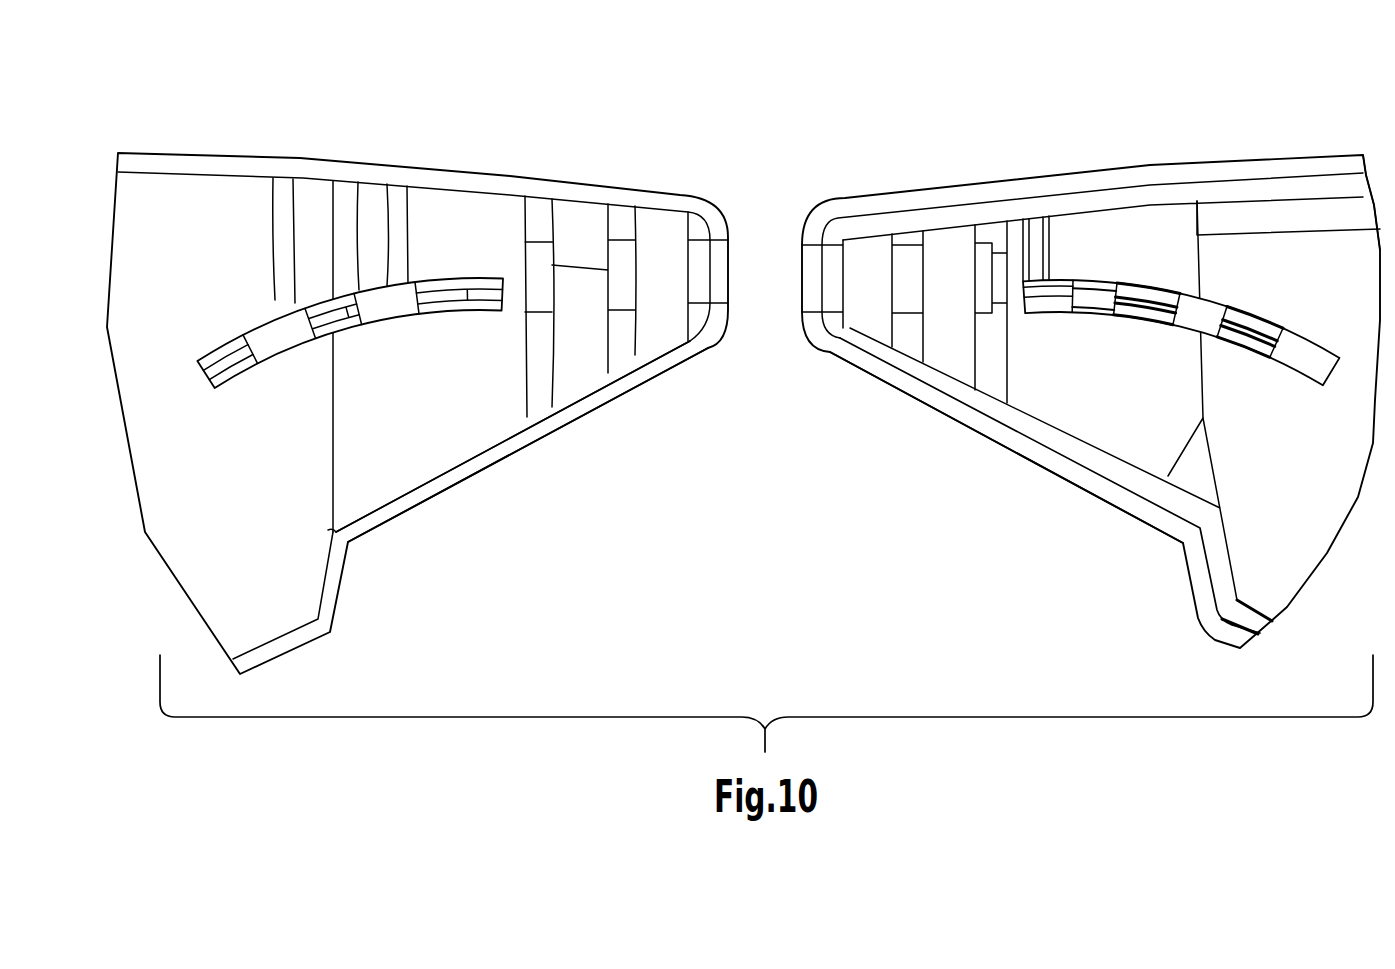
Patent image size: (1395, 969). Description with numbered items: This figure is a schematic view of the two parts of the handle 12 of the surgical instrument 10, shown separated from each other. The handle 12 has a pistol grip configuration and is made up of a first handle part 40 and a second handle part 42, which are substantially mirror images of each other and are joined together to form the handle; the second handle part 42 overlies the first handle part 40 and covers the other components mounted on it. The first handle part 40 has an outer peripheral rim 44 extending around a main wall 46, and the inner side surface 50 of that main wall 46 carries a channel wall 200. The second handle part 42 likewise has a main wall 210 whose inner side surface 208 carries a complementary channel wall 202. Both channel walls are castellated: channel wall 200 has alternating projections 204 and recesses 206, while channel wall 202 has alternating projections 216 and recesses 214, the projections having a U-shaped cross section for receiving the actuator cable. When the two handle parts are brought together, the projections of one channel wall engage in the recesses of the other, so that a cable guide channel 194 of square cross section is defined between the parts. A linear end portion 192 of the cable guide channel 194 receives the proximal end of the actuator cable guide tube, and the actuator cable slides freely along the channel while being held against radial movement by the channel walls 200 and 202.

The surgical instrument 10 is at (1260, 120).
The handle 12 is at (752, 168).
The first handle part 40 is at (944, 128).
The second handle part 42 is at (434, 136).
The outer peripheral rim 44 is at (997, 437).
The main wall 46 is at (1097, 427).
The inner side surface 50 is at (1133, 433).
The linear end portion 192 is at (1043, 310).
The cable guide channel 194 is at (1136, 268).
The channel wall 200 is at (1069, 262).
The channel wall 202 is at (317, 280).
The projections 204 is at (1228, 412).
The recesses 206 is at (1098, 277).
The inner side surface 208 is at (395, 462).
The main wall 210 is at (465, 413).
The recesses 214 is at (377, 292).
The projections 216 is at (218, 352).